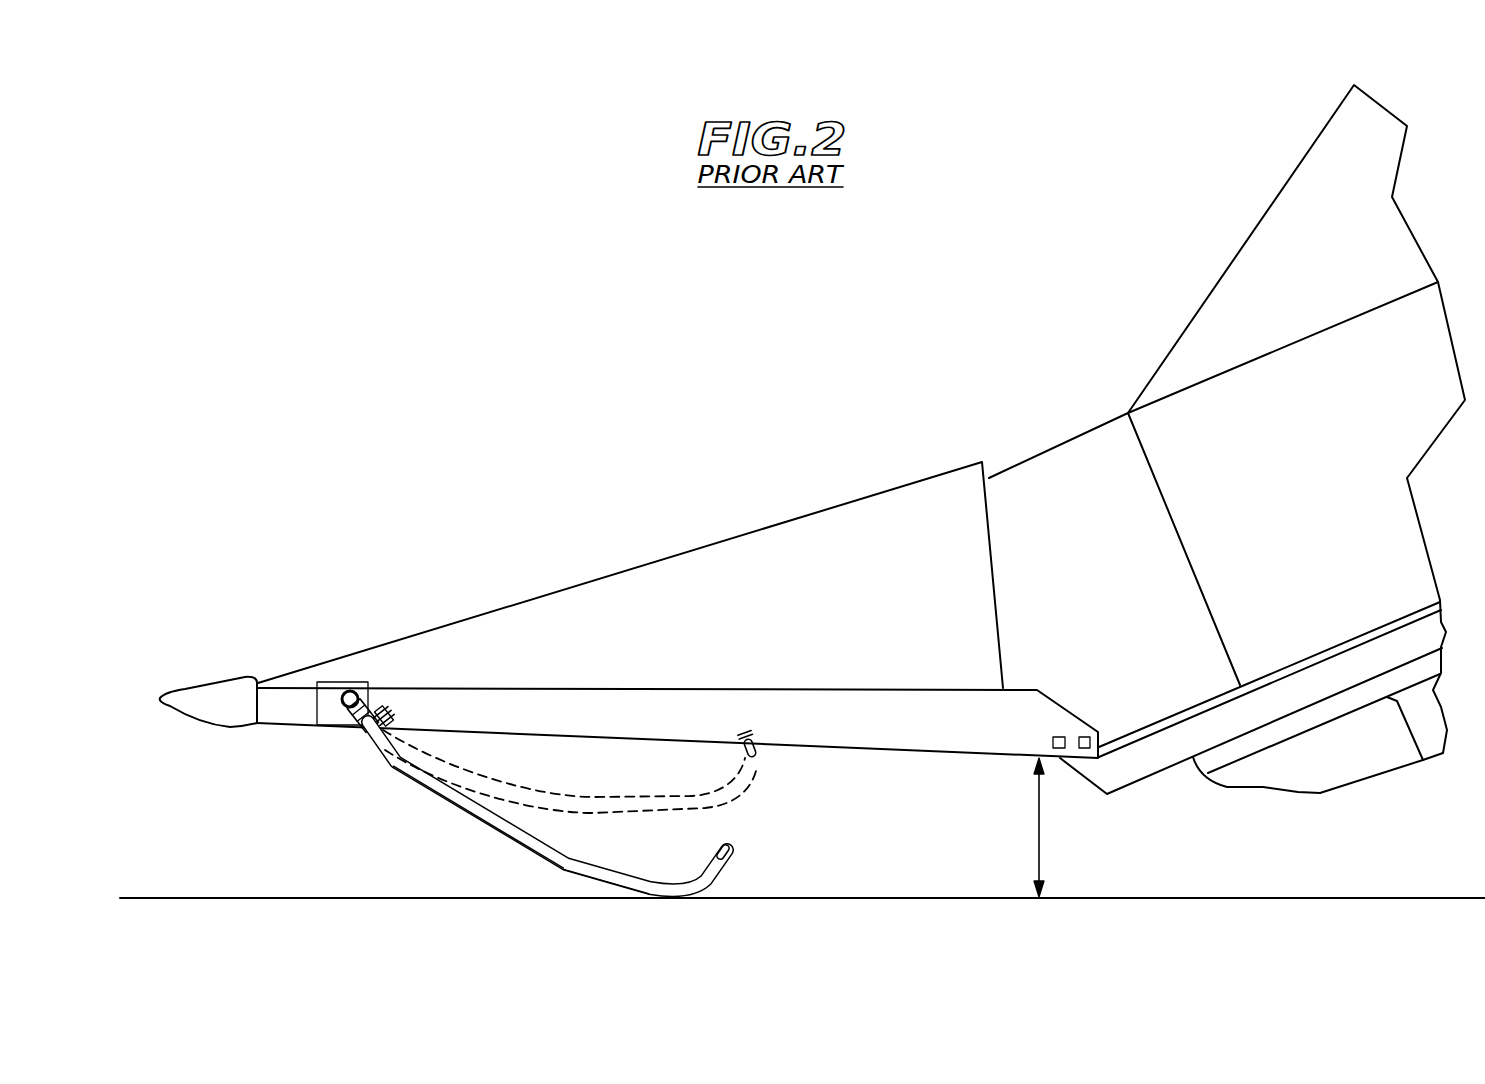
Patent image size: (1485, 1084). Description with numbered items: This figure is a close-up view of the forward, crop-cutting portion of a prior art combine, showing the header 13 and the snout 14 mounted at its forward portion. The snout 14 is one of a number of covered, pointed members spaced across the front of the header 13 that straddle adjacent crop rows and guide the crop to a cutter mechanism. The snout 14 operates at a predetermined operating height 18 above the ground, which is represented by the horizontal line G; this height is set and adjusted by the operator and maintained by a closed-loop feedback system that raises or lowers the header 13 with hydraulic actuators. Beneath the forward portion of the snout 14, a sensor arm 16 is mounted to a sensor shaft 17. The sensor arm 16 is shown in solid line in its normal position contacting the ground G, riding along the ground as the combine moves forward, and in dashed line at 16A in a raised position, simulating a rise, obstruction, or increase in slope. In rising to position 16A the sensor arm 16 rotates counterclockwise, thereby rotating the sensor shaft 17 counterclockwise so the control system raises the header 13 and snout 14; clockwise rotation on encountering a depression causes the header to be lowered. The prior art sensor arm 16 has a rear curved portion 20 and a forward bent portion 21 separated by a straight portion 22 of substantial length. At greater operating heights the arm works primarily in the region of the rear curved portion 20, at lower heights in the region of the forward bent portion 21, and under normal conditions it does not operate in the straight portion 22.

The header 13 is at (1200, 260).
The snout 14 is at (613, 546).
The sensor arm 16 is at (509, 854).
The sensor arm raised position 16A is at (758, 771).
The sensor shaft 17 is at (338, 711).
The operating height 18 is at (1037, 823).
The rear curved portion 20 is at (702, 888).
The forward bent portion 21 is at (552, 870).
The straight portion 22 is at (610, 887).
The ground G is at (858, 898).